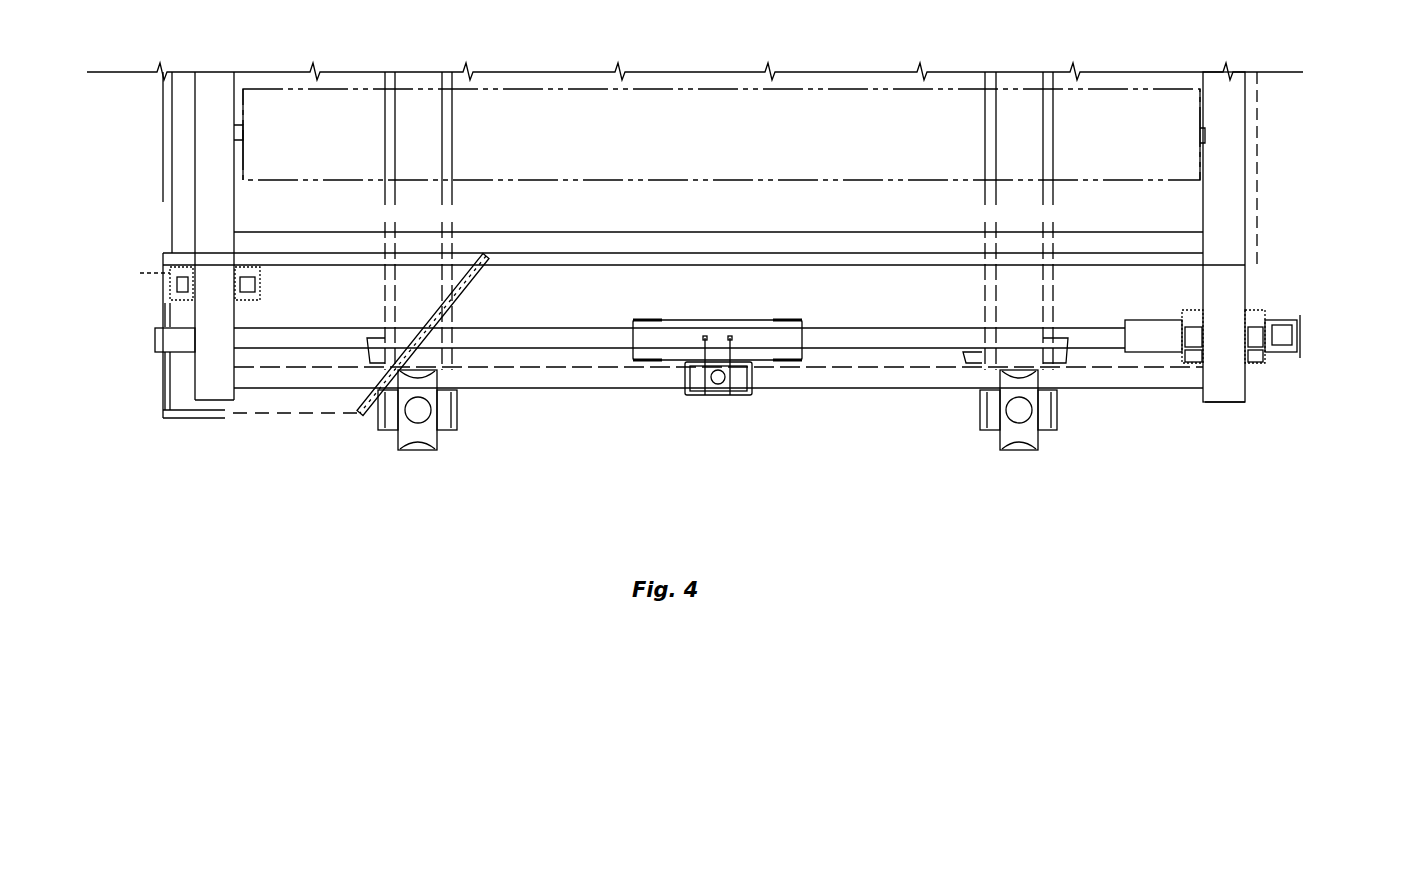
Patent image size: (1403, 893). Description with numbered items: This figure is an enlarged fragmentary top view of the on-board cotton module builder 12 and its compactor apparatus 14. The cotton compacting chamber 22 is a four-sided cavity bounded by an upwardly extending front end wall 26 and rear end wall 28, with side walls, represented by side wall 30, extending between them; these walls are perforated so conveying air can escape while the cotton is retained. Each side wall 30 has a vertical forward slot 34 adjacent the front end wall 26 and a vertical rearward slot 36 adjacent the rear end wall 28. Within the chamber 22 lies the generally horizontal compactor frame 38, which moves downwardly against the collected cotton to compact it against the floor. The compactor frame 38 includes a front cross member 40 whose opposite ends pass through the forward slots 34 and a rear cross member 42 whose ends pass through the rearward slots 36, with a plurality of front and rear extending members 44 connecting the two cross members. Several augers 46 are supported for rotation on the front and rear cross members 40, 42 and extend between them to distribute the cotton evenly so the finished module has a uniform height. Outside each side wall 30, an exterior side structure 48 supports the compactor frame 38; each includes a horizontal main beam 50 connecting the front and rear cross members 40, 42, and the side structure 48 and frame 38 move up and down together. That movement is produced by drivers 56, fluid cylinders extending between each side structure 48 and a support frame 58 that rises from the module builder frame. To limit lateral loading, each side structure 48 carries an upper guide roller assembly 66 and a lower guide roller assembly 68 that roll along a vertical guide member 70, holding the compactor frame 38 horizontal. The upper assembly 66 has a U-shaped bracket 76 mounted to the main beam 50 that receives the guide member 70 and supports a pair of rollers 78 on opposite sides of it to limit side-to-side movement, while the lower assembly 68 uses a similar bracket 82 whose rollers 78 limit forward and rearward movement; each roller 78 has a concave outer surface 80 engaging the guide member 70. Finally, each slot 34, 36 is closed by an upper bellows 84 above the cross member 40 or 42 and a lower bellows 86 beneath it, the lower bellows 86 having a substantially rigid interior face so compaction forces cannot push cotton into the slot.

The cotton module builder 12 is at (162, 414).
The compactor apparatus 14 is at (1249, 403).
The cotton compacting chamber 22 is at (826, 205).
The front end wall 26 is at (167, 137).
The rear end wall 28 is at (1260, 100).
The side wall 30 is at (885, 333).
The vertical forward slot 34 is at (193, 275).
The vertical rearward slot 36 is at (1250, 352).
The compactor frame 38 is at (1253, 282).
The front cross member 40 is at (217, 418).
The rear cross member 42 is at (1213, 405).
The front and rear extending members 44 is at (943, 253).
The auger 46 is at (1173, 88).
The exterior side structure 48 is at (593, 390).
The main beam 50 is at (658, 390).
The driver 56 is at (716, 399).
The support frame 58 is at (714, 320).
The upper guide roller assembly 66 is at (440, 445).
The lower guide roller assembly 68 is at (457, 423).
The vertical guide member 70 is at (395, 430).
The bracket 76 is at (440, 378).
The roller 78 is at (380, 403).
The concave outer surface 80 is at (382, 418).
The bracket 82 is at (393, 433).
The upper bellows 84 is at (170, 297).
The lower bellows 86 is at (1265, 317).